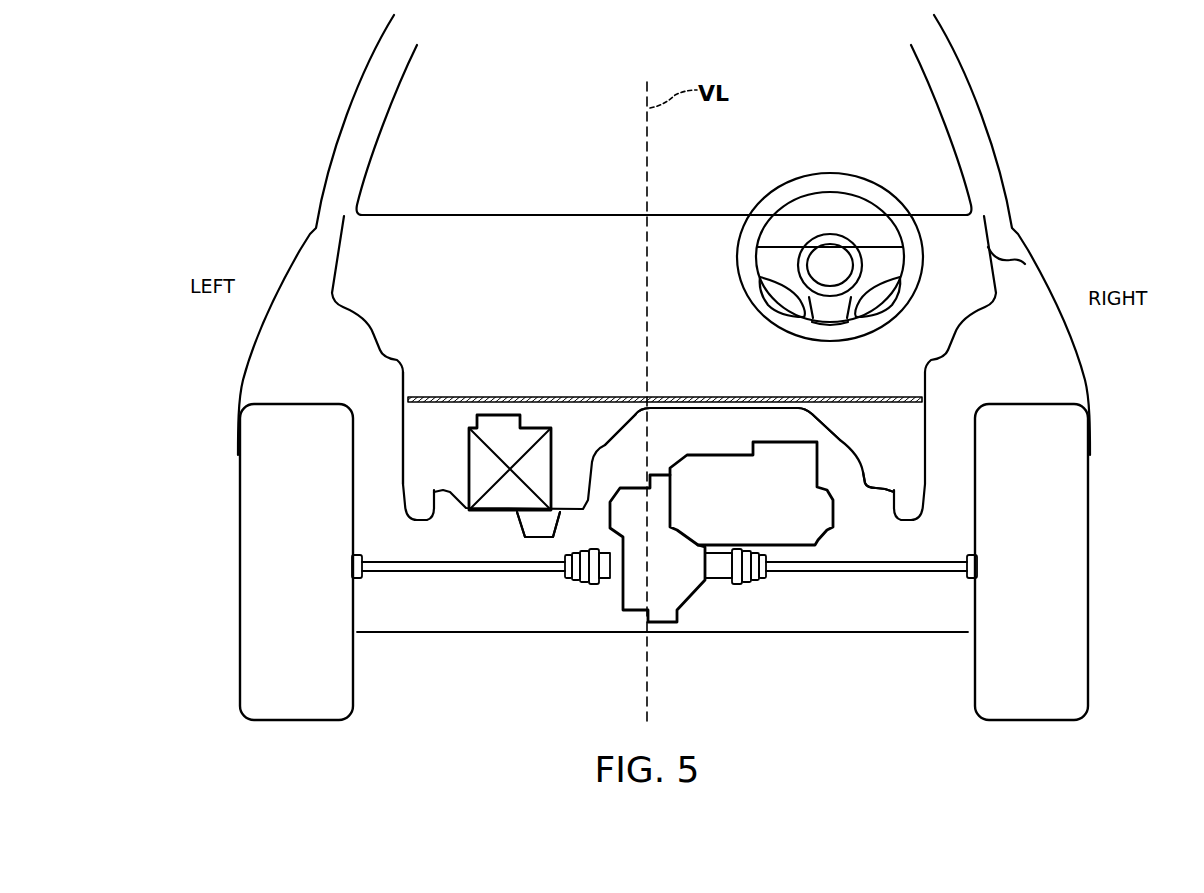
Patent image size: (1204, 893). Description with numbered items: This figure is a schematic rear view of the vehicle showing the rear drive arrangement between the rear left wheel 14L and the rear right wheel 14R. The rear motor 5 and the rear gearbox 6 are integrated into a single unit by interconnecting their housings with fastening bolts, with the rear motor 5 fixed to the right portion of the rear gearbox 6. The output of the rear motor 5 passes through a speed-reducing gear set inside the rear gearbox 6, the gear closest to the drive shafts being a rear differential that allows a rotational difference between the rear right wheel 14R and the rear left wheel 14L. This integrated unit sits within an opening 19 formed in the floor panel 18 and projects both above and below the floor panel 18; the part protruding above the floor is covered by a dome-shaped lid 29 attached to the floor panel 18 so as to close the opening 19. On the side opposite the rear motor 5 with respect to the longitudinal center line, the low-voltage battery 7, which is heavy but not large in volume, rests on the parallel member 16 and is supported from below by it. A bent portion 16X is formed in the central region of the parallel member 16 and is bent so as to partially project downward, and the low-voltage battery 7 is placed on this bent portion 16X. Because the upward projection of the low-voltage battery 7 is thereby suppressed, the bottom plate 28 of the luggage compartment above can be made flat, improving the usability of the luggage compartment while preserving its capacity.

The rear motor 5 is at (797, 528).
The rear gearbox 6 is at (680, 590).
The low-voltage battery 7 is at (499, 433).
The rear left wheel 14L is at (253, 550).
The rear right wheel 14R is at (1075, 553).
The parallel member 16 is at (542, 610).
The bent portion 16X is at (537, 527).
The floor panel 18 is at (413, 492).
The opening 19 is at (843, 489).
The bottom plate 28 is at (567, 396).
The dome-shaped lid 29 is at (833, 431).